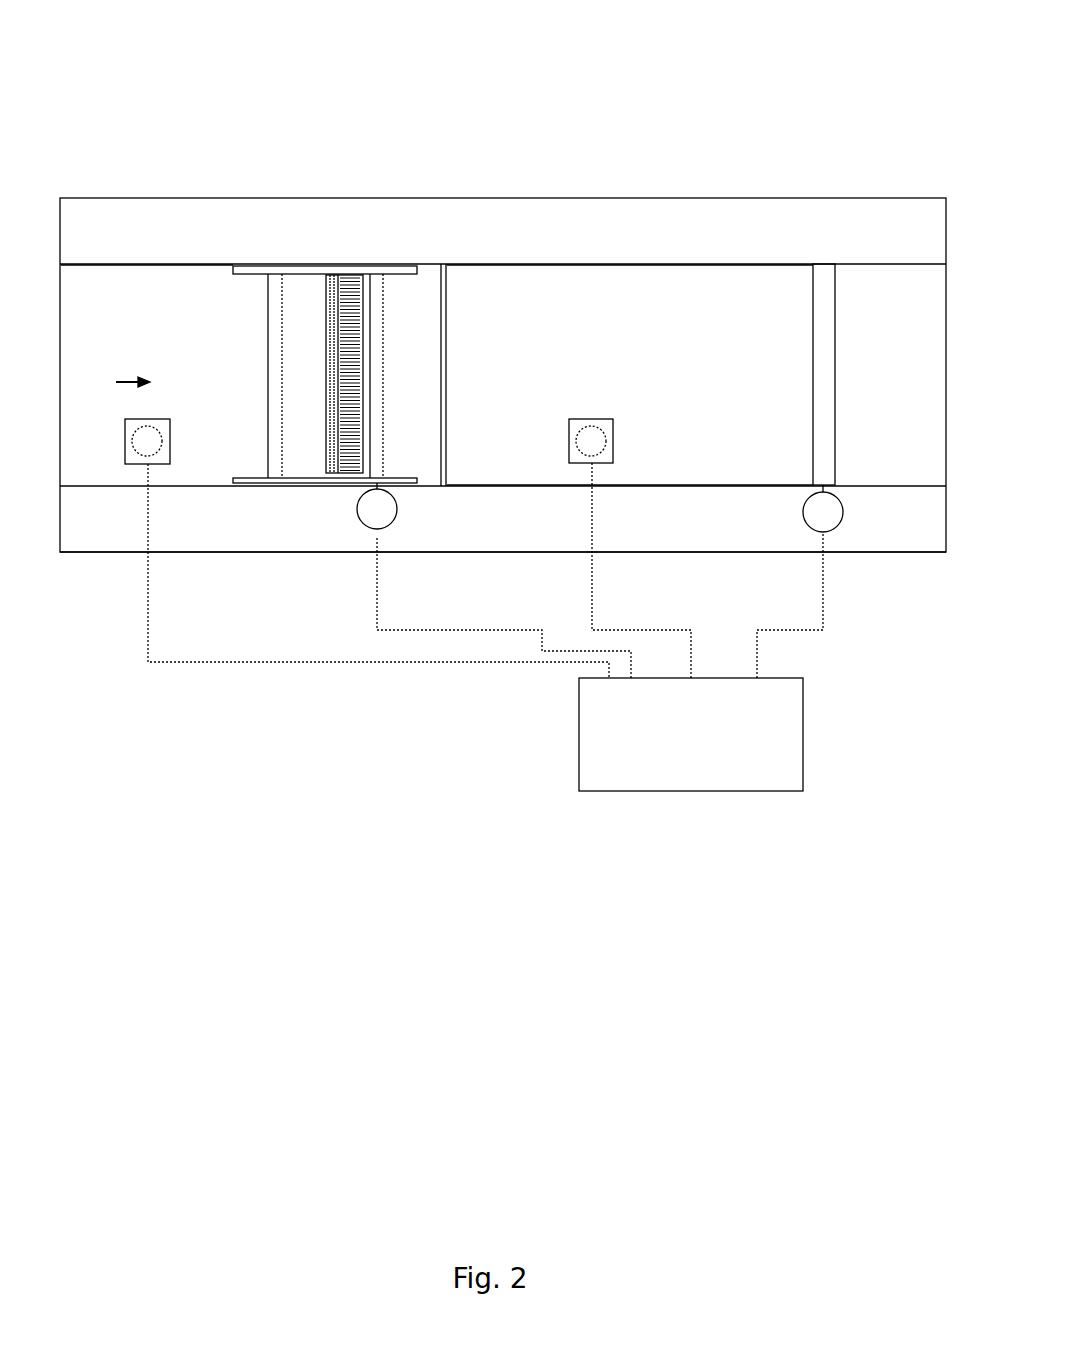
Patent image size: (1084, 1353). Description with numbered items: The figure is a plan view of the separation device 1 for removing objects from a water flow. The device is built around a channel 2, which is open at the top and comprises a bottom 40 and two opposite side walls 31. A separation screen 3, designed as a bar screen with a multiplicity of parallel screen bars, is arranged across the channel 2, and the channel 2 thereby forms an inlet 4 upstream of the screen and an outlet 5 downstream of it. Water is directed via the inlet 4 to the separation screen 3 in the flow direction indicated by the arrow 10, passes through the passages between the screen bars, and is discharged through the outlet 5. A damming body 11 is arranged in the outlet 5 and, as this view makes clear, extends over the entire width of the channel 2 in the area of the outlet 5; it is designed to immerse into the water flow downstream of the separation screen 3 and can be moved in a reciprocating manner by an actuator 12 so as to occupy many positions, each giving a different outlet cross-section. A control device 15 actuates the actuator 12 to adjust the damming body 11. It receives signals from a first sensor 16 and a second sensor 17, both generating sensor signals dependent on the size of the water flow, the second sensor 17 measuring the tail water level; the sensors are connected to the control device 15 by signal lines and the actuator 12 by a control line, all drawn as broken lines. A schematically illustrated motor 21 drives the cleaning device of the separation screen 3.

The separation device 1 is at (415, 715).
The channel 2 is at (502, 291).
The separation screen 3 is at (343, 266).
The inlet 4 is at (204, 323).
The outlet 5 is at (640, 330).
The arrow 10 is at (130, 367).
The damming body 11 is at (822, 290).
The actuator 12 is at (838, 525).
The control device 15 is at (730, 793).
The first sensor 16 is at (130, 470).
The second sensor 17 is at (574, 475).
The motor 21 is at (363, 527).
The side walls 31 is at (743, 236).
The bottom 40 is at (584, 286).